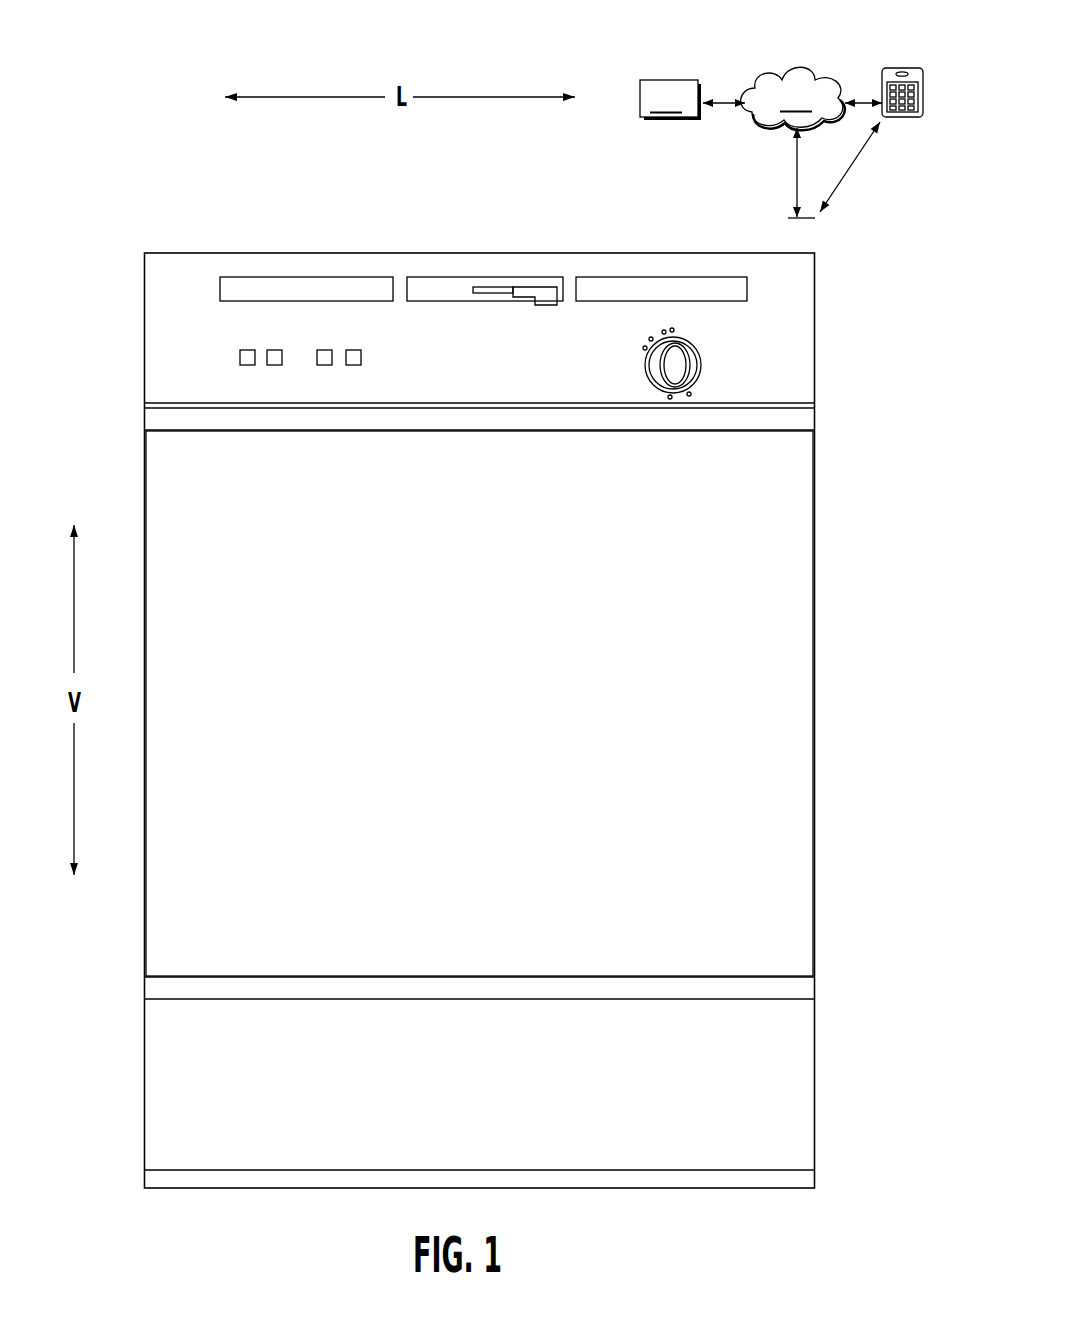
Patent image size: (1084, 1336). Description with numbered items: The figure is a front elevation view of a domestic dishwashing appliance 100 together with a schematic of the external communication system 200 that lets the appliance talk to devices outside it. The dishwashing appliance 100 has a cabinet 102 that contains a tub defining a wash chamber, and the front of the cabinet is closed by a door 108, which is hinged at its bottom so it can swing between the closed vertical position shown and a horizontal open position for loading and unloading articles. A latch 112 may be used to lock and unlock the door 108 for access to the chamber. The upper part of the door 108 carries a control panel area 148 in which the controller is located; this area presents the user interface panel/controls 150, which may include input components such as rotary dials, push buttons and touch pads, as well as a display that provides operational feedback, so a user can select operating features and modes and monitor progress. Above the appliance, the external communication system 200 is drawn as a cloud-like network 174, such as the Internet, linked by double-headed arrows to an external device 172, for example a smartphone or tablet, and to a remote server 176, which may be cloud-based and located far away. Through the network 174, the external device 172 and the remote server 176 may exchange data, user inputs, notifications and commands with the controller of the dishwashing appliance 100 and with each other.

The dishwashing appliance 100 is at (855, 868).
The cabinet 102 is at (132, 489).
The door 108 is at (773, 677).
The latch 112 is at (543, 293).
The control panel area 148 is at (787, 302).
The user interface panel/controls 150 is at (327, 350).
The external device 172 is at (923, 80).
The network 174 is at (793, 98).
The remote server 176 is at (670, 98).
The external communication system 200 is at (847, 42).